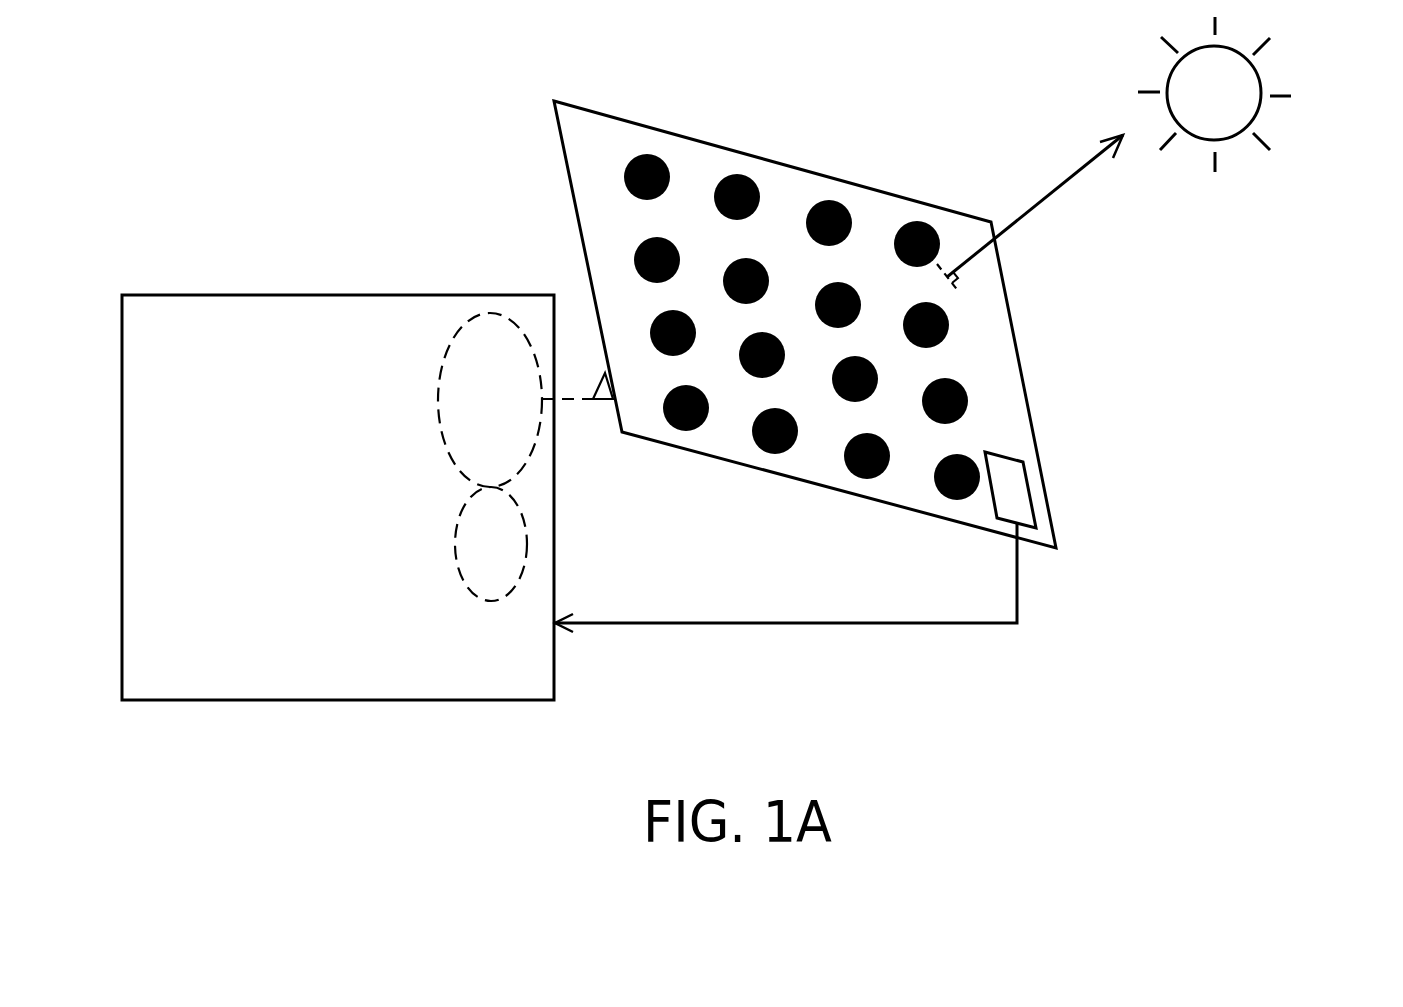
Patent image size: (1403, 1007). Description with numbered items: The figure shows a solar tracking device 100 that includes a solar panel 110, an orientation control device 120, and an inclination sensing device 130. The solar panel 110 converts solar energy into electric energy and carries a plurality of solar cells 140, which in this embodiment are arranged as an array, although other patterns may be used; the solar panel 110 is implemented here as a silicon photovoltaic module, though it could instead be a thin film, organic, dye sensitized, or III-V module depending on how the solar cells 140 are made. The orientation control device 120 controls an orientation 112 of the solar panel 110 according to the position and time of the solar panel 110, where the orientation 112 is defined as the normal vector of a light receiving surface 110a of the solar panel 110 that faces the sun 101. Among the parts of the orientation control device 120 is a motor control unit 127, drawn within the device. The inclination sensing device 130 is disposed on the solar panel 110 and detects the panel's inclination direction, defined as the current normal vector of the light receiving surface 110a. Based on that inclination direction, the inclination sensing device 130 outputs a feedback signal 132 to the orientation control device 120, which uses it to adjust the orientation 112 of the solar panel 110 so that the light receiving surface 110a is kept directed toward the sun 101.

The solar tracking device 100 is at (1326, 736).
The sun 101 is at (1243, 113).
The solar panel 110 is at (1015, 327).
The light receiving surface 110a is at (1010, 415).
The orientation 112 is at (1047, 198).
The orientation control device 120 is at (345, 294).
The motor control unit 127 is at (493, 313).
The inclination sensing device 130 is at (1015, 497).
The feedback signal 132 is at (787, 624).
The solar cells 140 is at (925, 221).